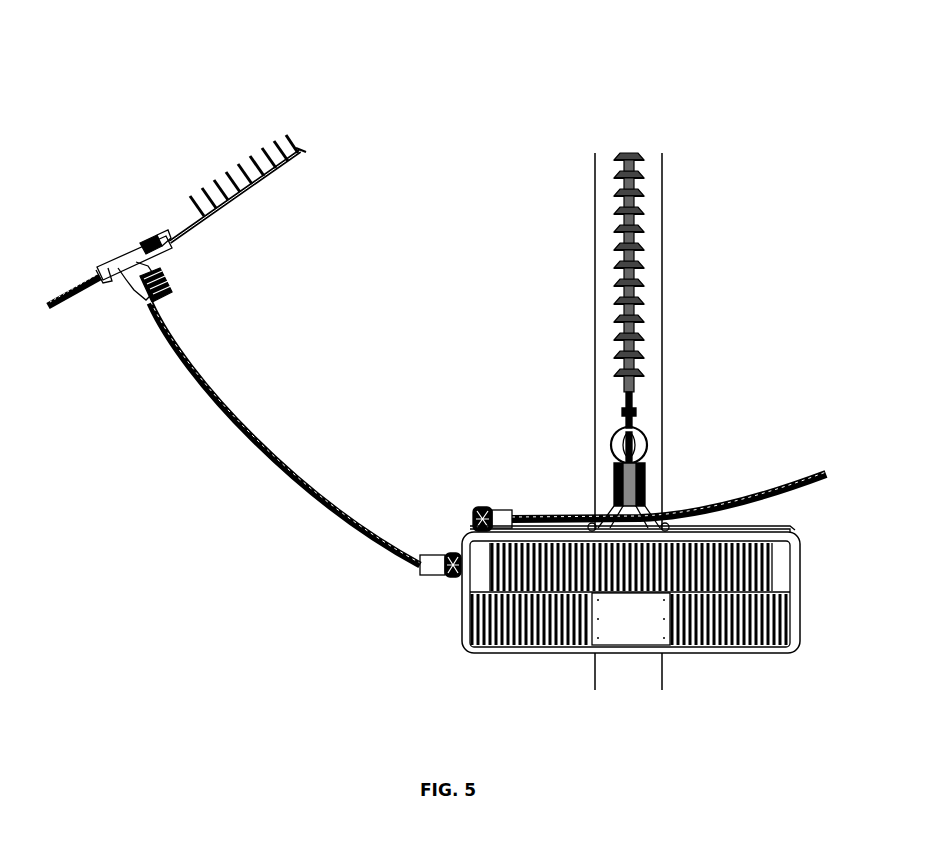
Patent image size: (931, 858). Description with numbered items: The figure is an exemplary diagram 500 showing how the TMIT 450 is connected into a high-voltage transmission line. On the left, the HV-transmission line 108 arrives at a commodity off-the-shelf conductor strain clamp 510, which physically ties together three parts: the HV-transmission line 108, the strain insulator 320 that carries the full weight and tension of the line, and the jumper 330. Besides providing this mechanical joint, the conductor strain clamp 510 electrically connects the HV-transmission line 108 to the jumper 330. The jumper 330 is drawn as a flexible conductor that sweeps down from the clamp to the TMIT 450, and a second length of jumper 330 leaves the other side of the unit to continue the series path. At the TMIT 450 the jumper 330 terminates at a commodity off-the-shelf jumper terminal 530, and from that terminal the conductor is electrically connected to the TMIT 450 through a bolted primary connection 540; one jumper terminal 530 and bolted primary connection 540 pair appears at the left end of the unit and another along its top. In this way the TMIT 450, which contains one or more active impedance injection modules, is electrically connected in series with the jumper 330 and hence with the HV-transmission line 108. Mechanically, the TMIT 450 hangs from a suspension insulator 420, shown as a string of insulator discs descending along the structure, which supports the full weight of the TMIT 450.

The exemplary diagram 500 is at (470, 46).
The HV-transmission line 108 is at (69, 283).
The strain insulator 320 is at (267, 193).
The commodity off-the-shelf conductor strain clamp 510 is at (122, 283).
The jumper 330 is at (187, 375).
The suspension insulator 420 is at (662, 287).
The commodity off-the-shelf jumper terminal 530 is at (480, 498).
The bolted primary connection 540 is at (505, 497).
The TMIT 450 is at (512, 660).